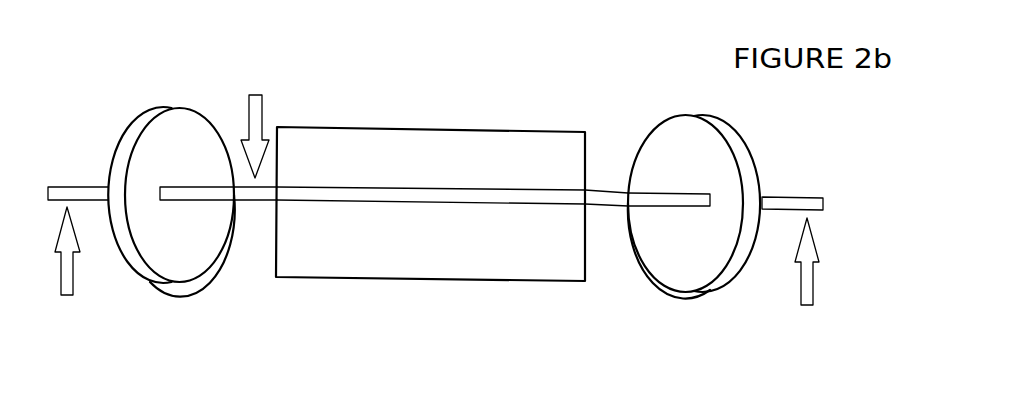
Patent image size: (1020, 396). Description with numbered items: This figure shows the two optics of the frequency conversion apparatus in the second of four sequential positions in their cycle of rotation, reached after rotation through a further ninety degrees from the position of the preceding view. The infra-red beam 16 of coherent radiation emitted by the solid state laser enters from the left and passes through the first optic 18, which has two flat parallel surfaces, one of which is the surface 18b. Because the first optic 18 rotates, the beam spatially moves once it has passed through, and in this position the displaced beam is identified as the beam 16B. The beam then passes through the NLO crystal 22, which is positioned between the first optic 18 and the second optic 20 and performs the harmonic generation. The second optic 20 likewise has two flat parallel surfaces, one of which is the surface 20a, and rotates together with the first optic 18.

The infra-red beam 16 is at (71, 272).
The beam after passage through the first optic 16B is at (263, 113).
The first optic 18 is at (143, 123).
The flat parallel surface of the first optic 18b is at (180, 268).
The second optic 20 is at (742, 167).
The flat parallel surface of the second optic 20a is at (680, 275).
The NLO crystal 22 is at (472, 152).